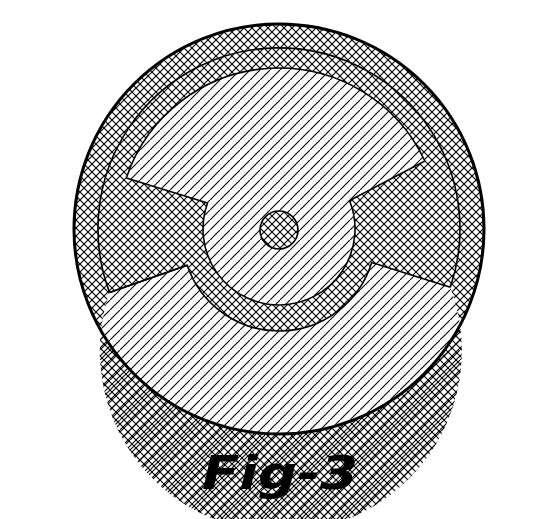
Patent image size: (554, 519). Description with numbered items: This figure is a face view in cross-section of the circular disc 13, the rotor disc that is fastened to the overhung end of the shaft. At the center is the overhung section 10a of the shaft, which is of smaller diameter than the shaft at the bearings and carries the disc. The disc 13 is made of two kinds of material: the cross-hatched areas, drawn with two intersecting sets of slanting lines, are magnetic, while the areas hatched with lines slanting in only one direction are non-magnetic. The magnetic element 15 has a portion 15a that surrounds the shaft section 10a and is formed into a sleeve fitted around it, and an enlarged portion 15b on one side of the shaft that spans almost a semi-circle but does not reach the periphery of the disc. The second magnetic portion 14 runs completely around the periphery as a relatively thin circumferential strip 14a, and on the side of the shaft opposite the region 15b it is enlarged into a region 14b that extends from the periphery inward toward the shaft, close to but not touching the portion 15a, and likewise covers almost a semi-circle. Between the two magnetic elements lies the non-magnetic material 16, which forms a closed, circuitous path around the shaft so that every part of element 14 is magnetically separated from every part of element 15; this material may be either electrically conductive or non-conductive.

The overhung section of the shaft 10a is at (290, 231).
The circular disc 13 is at (96, 326).
The magnetic metal portion 14 is at (462, 184).
The circumferential strip 14a is at (447, 128).
The enlarged region of magnetic metal 14b is at (163, 390).
The magnetic element 15 is at (392, 109).
The shaft-surrounding portion of the magnetic element 15a is at (337, 258).
The enlarged portion of the magnetic element 15b is at (333, 93).
The non-magnetic material 16 is at (112, 228).